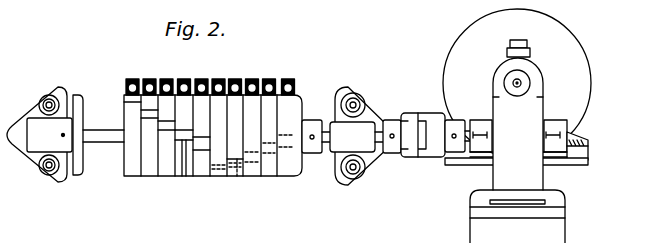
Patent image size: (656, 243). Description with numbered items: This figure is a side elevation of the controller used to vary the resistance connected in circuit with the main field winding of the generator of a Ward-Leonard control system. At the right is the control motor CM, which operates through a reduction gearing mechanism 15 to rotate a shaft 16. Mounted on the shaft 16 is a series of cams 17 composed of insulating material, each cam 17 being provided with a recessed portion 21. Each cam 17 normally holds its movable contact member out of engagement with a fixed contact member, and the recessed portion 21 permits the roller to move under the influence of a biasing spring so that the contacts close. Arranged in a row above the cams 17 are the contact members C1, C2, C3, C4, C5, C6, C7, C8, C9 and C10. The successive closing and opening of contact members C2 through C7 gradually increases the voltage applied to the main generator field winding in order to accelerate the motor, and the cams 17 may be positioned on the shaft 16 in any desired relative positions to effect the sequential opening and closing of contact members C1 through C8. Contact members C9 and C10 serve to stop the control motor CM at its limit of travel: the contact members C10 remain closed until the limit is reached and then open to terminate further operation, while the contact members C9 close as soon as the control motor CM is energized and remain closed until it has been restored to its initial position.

The contact members C1 is at (132, 79).
The contact members C2 is at (150, 78).
The contact members C3 is at (166, 79).
The contact members C4 is at (184, 78).
The contact members C5 is at (202, 79).
The contact members C6 is at (219, 78).
The contact members C7 is at (235, 79).
The contact members C8 is at (252, 78).
The contact members C9 is at (269, 79).
The contact members C10 is at (288, 78).
The reduction gearing mechanism 15 is at (455, 190).
The shaft 16 is at (323, 121).
The cams 17 is at (127, 177).
The recessed portion 21 is at (147, 117).
The control motor CM is at (582, 19).